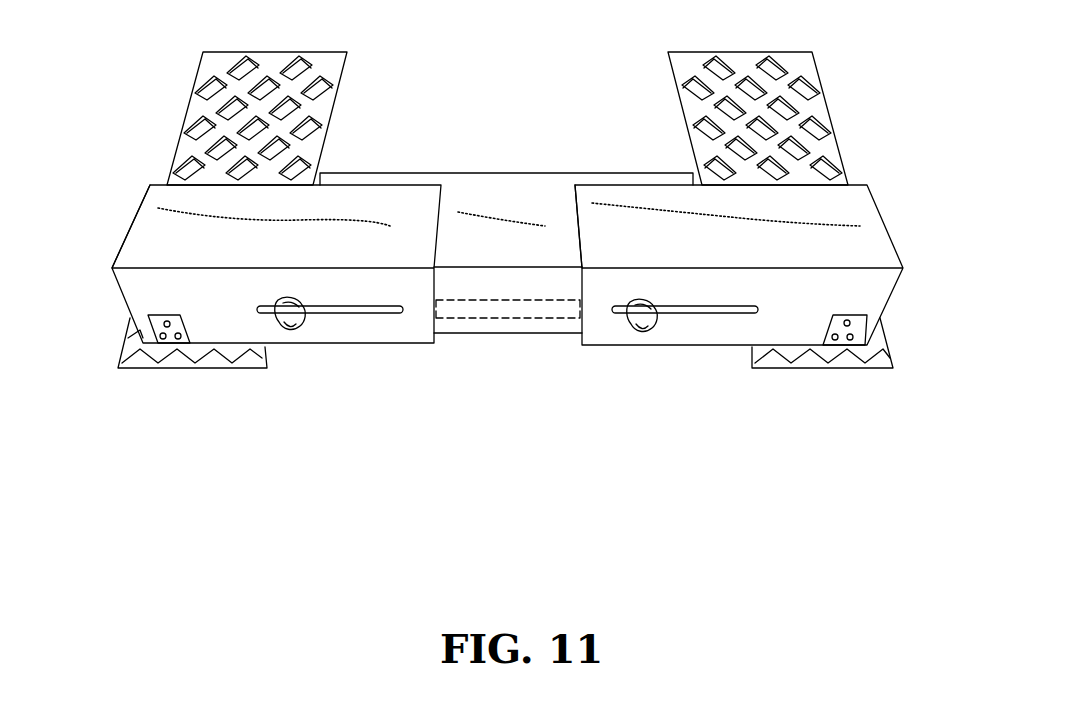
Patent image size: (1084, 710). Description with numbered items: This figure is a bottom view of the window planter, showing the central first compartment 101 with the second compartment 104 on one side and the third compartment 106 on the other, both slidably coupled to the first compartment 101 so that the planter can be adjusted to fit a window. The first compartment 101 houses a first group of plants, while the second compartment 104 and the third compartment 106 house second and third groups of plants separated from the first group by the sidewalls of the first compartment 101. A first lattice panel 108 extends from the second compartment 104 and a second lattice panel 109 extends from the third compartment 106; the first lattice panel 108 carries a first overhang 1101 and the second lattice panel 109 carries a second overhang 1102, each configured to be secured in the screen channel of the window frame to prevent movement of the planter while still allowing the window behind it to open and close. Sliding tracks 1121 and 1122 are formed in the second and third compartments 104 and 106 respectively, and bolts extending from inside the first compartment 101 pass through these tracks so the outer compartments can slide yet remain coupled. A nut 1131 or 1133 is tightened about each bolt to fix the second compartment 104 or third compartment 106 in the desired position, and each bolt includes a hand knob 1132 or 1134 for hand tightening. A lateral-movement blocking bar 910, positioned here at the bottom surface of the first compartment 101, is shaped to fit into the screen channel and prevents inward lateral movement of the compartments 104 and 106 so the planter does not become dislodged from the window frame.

The first compartment 101 is at (500, 243).
The second compartment 104 is at (235, 247).
The third compartment 106 is at (743, 243).
The first lattice panel 108 is at (270, 60).
The second lattice panel 109 is at (702, 62).
The lateral-movement blocking bar 910 is at (460, 320).
The first overhang 1101 is at (128, 338).
The second overhang 1102 is at (885, 363).
The sliding track 1121 is at (362, 312).
The sliding track 1122 is at (698, 312).
The nut 1131 is at (282, 330).
The hand knob 1132 is at (303, 332).
The nut 1133 is at (645, 324).
The hand knob 1134 is at (640, 328).